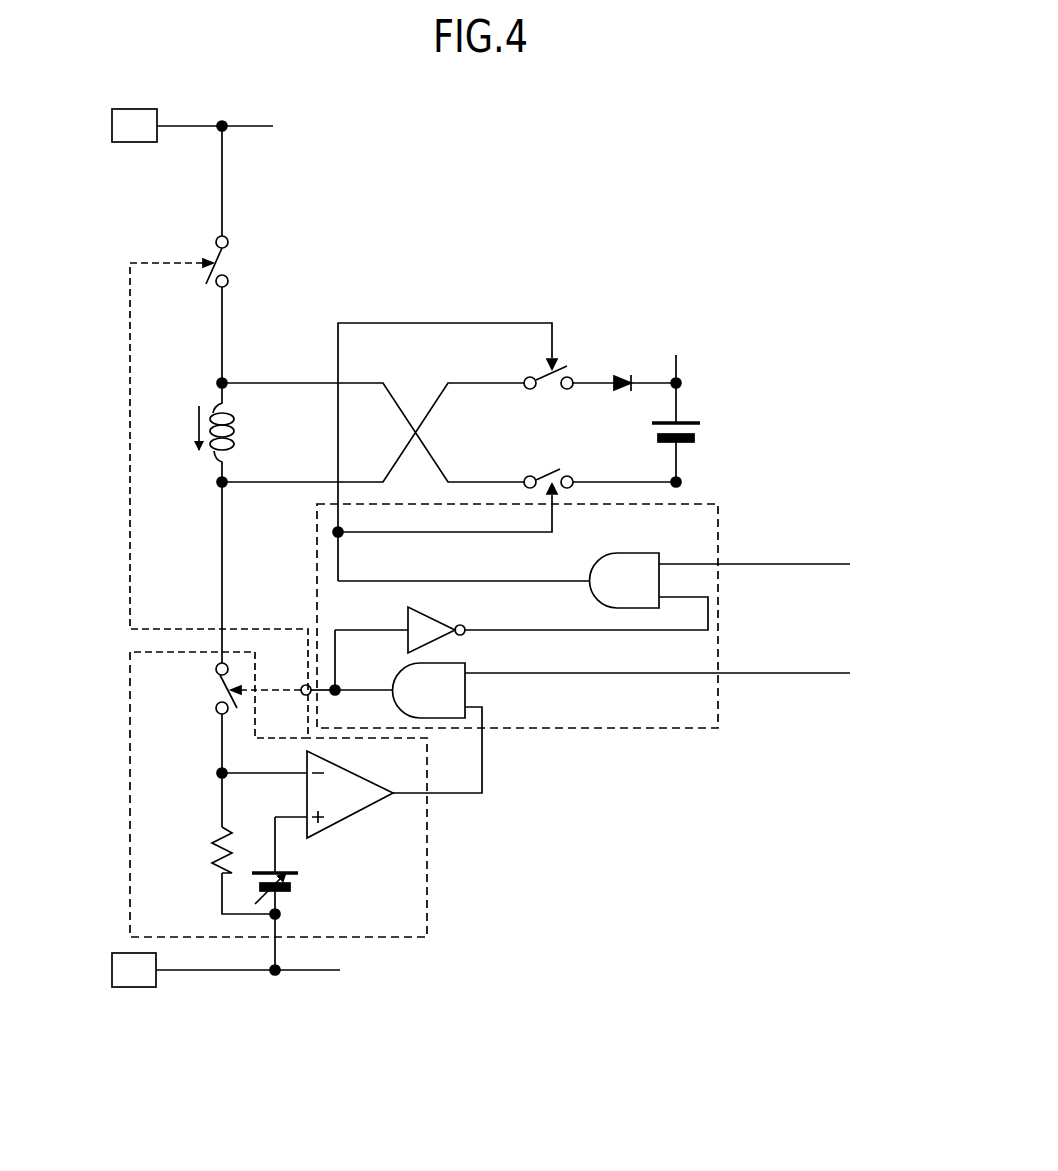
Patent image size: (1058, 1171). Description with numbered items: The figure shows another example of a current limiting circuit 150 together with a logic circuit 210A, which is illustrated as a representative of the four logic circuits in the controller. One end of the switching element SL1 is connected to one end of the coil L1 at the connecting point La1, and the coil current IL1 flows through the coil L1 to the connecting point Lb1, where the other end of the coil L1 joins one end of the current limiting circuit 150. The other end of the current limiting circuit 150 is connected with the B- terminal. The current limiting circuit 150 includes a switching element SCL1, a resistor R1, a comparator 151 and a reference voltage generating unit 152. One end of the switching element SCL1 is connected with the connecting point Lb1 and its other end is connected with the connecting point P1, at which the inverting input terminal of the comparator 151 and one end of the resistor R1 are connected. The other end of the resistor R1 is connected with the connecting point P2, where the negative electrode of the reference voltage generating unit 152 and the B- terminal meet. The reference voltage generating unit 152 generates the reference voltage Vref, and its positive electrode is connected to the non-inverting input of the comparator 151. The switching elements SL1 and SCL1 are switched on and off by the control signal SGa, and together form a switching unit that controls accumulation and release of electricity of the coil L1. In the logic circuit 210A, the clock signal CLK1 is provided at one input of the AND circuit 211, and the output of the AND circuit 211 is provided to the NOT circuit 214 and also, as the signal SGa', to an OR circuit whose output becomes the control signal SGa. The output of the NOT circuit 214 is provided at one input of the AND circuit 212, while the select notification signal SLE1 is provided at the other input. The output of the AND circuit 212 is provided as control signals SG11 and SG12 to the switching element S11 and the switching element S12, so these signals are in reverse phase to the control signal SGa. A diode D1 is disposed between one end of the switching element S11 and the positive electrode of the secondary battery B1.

The B− terminal B- is at (110, 970).
The switching element SL1 is at (214, 261).
The control signal SGa is at (219, 498).
The connecting point La1 is at (217, 383).
The coil current IL1 is at (179, 428).
The coil L1 is at (234, 432).
The connecting point Lb1 is at (217, 483).
The control signal SG11 is at (449, 323).
The switching element S11 is at (553, 393).
The diode D1 is at (622, 371).
The secondary battery B1 is at (696, 421).
The switching element S12 is at (565, 474).
The control signal SG12 is at (451, 534).
The AND circuit 212 is at (639, 553).
The NOT circuit 214 is at (438, 621).
The logic circuit 210A is at (718, 614).
The AND circuit 211 is at (442, 669).
The signal SGa' is at (313, 665).
The clock signal CLK1 is at (657, 660).
The select notification signal SLE1 is at (777, 527).
The switching element SCL1 is at (229, 692).
The connecting point P1 is at (216, 774).
The comparator 151 is at (352, 773).
The resistor R1 is at (206, 850).
The reference voltage Vref is at (320, 852).
The reference voltage generating unit 152 is at (298, 887).
The connecting point P2 is at (280, 914).
The current limiting circuit 150 is at (428, 878).